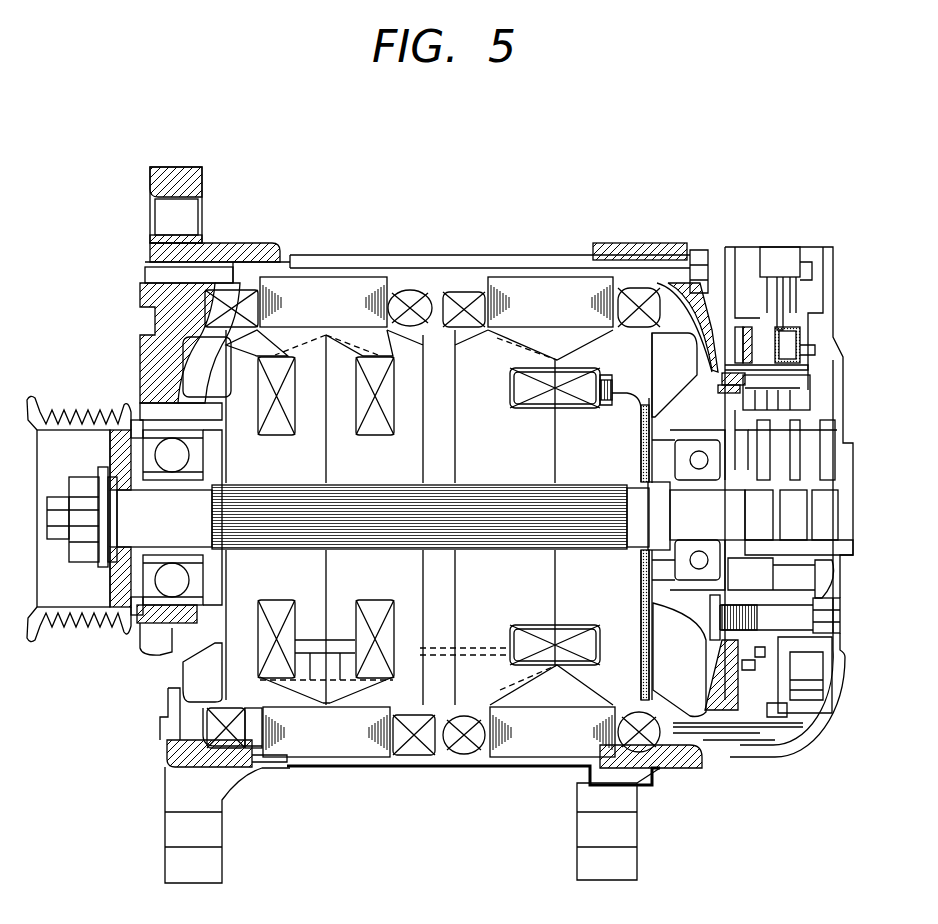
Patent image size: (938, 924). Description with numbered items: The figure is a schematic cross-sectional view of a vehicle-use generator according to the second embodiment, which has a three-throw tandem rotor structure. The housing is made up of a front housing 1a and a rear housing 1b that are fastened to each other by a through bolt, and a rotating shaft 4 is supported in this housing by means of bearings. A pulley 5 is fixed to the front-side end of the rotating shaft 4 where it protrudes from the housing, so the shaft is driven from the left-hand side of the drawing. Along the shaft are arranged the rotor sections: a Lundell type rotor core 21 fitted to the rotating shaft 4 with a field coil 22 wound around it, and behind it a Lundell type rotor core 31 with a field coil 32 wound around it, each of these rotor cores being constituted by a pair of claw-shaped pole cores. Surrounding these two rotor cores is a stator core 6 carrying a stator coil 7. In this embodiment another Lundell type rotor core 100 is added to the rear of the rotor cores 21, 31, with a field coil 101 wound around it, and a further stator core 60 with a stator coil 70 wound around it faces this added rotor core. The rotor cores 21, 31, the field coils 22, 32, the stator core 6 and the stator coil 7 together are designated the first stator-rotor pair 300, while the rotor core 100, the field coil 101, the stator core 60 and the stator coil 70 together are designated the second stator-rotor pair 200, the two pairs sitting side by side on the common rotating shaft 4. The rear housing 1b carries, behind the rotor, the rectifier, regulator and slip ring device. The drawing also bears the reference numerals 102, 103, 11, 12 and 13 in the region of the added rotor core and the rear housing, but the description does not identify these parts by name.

The front housing 1a is at (246, 250).
The rear housing 1b is at (623, 247).
The rotating shaft 4 is at (186, 531).
The pulley 5 is at (32, 642).
The stator core 6 is at (315, 285).
The stator coil 7 is at (415, 292).
The stator coil 70 is at (460, 292).
The stator core 60 is at (527, 285).
The Lundell type rotor core 21 is at (234, 462).
The field coil 22 is at (284, 425).
The Lundell type rotor core 31 is at (338, 462).
The field coil 32 is at (384, 425).
The Lundell type rotor core 100 is at (478, 466).
The field coil 101 is at (545, 405).
The field coil 102 is at (420, 645).
The lead wire 103 is at (633, 400).
The fastening bolt 11 is at (817, 590).
The brush holder 12 is at (795, 565).
The slip rings 13 is at (830, 532).
The second stator-rotor pair 200 is at (535, 735).
The first stator-rotor pair 300 is at (330, 735).